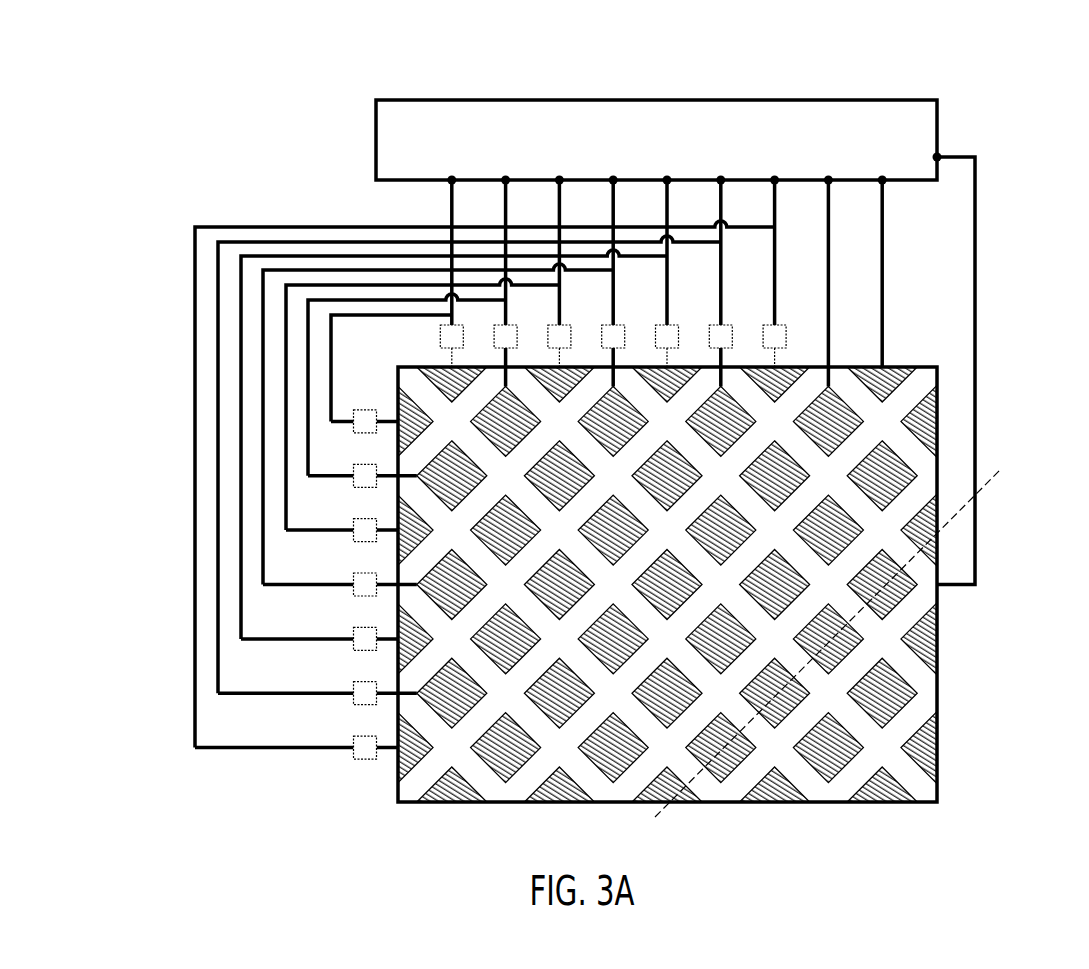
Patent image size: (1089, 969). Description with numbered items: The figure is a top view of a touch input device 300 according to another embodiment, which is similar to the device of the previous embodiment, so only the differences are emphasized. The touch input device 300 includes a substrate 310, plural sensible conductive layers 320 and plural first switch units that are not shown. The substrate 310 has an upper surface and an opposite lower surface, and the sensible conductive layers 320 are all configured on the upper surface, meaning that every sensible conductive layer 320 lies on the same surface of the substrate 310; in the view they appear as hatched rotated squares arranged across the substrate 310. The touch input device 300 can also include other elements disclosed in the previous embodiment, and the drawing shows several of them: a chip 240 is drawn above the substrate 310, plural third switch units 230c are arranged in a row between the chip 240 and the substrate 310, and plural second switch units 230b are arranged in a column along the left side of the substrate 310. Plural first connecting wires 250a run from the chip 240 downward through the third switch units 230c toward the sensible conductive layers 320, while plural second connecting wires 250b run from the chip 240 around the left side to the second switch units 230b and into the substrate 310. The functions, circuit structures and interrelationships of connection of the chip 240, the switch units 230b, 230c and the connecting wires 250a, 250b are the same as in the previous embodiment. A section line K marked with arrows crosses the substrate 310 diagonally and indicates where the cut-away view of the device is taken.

The chip 240 is at (376, 126).
The first connecting wire 250a is at (452, 213).
The third switch unit 230c is at (446, 342).
The second connecting wire 250b is at (195, 238).
The second switch unit 230b is at (353, 412).
The substrate 310 is at (920, 383).
The sensible conductive layer 320 is at (940, 413).
The touch input device 300 is at (1055, 841).
The line K- K is at (1000, 470).